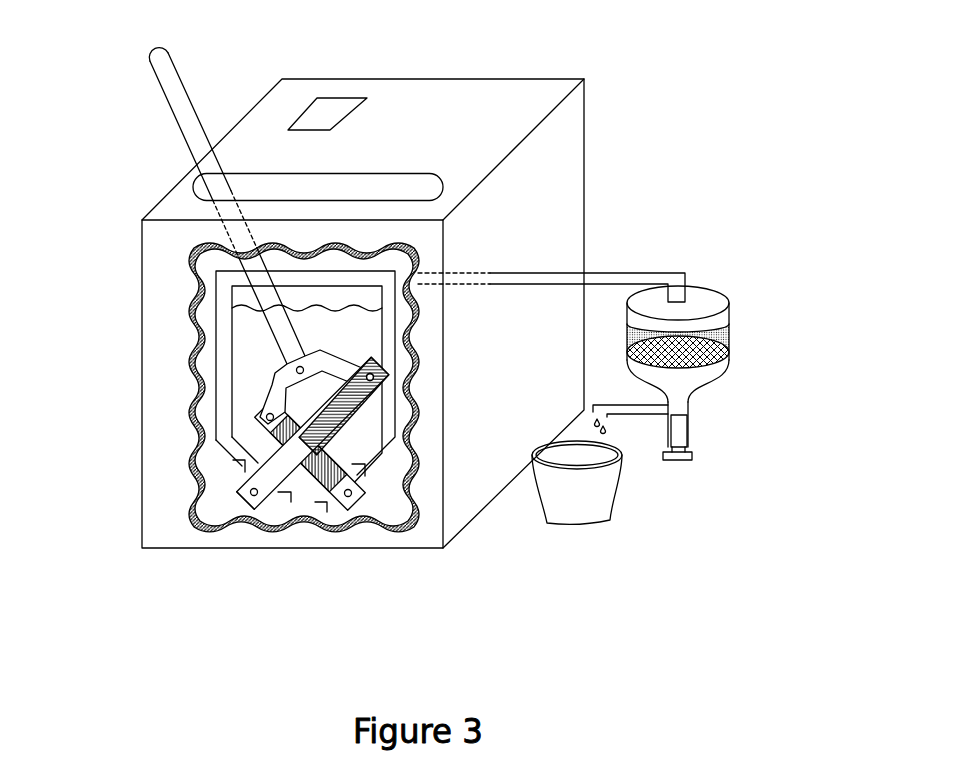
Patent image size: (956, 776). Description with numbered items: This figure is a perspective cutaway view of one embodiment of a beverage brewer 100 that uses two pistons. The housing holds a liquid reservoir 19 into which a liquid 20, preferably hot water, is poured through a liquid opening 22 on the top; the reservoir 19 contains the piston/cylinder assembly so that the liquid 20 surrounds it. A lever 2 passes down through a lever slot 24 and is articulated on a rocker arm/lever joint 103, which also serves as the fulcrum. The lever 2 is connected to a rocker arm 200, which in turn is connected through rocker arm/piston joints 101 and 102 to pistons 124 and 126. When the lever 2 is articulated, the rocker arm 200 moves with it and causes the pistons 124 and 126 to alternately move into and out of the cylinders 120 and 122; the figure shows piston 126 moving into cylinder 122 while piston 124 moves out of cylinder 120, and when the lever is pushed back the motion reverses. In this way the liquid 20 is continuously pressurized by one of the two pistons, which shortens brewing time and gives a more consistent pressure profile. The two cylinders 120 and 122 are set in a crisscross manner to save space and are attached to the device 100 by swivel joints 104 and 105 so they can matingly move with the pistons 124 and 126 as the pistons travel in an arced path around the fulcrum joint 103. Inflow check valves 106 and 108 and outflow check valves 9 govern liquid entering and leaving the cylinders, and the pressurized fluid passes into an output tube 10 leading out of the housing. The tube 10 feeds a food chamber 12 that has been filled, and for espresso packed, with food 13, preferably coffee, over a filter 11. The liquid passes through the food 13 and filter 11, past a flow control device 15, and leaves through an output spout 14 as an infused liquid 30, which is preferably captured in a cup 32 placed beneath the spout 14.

The beverage brewer 100 is at (490, 88).
The lever 2 is at (162, 65).
The liquid opening 22 is at (330, 105).
The lever slot 24 is at (200, 190).
The output tube 10 is at (223, 280).
The liquid 20 is at (202, 307).
The liquid reservoir 19 is at (218, 488).
The rocker arm/lever joint 103 is at (296, 369).
The piston 124 is at (340, 397).
The rocker arm 200 is at (275, 392).
The rocker arm/piston joint 101 is at (266, 418).
The outflow check valve 9 is at (243, 463).
The rocker arm/piston joint 102 is at (375, 380).
The swivel joint 104 is at (250, 497).
The cylinder 120 is at (260, 508).
The inflow check valve 106 is at (278, 500).
The piston 126 is at (307, 473).
The inflow check valve 108 is at (320, 505).
The cylinder 122 is at (340, 508).
The swivel joint 105 is at (365, 470).
The food 13 is at (688, 327).
The food chamber 12 is at (720, 317).
The filter 11 is at (727, 347).
The flow control device 15 is at (680, 438).
The output spout 14 is at (647, 412).
The infused liquid 30 is at (604, 433).
The cup 32 is at (587, 523).